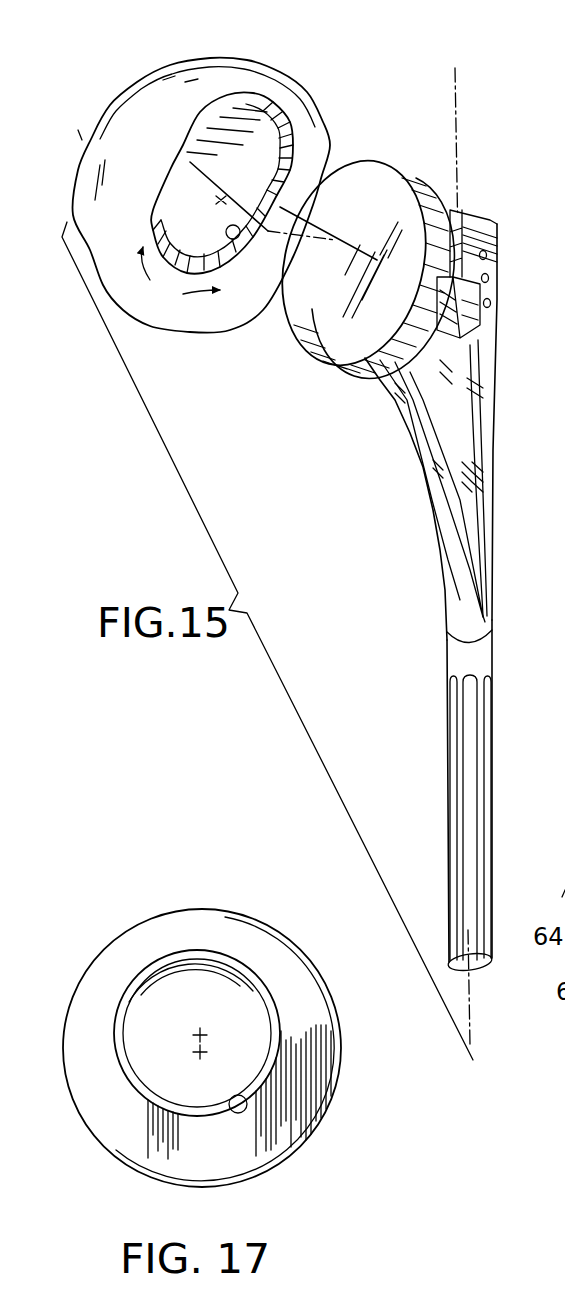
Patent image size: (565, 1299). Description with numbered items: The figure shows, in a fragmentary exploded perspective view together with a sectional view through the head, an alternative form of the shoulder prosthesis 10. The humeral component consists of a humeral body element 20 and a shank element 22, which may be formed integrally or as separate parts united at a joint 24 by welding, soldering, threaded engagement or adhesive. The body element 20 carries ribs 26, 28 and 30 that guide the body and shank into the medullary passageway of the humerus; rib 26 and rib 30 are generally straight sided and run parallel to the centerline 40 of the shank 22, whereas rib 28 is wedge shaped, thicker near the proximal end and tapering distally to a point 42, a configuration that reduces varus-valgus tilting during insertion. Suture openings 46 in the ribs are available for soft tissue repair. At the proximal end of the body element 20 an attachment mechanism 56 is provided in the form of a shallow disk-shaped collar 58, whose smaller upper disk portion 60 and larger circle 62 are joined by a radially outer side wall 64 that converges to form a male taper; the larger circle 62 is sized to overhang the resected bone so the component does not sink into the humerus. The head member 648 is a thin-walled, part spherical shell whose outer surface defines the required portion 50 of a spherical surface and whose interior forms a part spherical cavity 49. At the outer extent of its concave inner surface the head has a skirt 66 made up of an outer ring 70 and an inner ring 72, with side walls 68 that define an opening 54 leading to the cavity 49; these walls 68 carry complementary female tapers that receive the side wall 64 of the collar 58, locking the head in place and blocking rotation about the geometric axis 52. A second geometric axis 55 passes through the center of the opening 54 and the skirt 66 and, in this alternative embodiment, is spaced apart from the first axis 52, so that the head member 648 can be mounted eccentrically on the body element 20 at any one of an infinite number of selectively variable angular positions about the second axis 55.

In FIG. 15, the shoulder prosthesis 10 is at (72, 123).
In FIG. 15, the humeral body element 20 is at (500, 282).
In FIG. 15, the shank element 22 is at (501, 697).
In FIG. 15, the joint 24 is at (447, 643).
In FIG. 15, the rib 26 is at (427, 430).
In FIG. 15, the rib 28 is at (473, 431).
In FIG. 15, the rib 30 is at (475, 225).
In FIG. 15, the centerline 40 is at (460, 106).
In FIG. 15, the point 42 is at (485, 614).
In FIG. 15, the suture openings 46 is at (497, 243).
In FIG. 15, the part spherical cavity 49 is at (229, 146).
In FIG. 17, the part spherical cavity 49 is at (166, 1046).
In FIG. 15, the portion of a spherical surface 50 is at (130, 117).
In FIG. 15, the geometric axis 52 is at (222, 200).
In FIG. 17, the geometric axis 52 is at (201, 1052).
In FIG. 17, the opening 54 is at (282, 1003).
In FIG. 15, the second geometric axis 55 is at (293, 185).
In FIG. 17, the second geometric axis 55 is at (203, 1033).
In FIG. 15, the attachment mechanism 56 is at (305, 378).
In FIG. 15, the disk-shaped collar 58 is at (380, 194).
In FIG. 15, the upper disk portion 60 is at (310, 320).
In FIG. 15, the larger circle 62 is at (423, 347).
In FIG. 15, the side wall 64 is at (363, 362).
In FIG. 15, the skirt 66 is at (177, 313).
In FIG. 17, the skirt 66 is at (117, 1127).
In FIG. 15, the side walls 68 is at (293, 153).
In FIG. 17, the side walls 68 is at (248, 1100).
In FIG. 15, the outer ring 70 is at (230, 310).
In FIG. 15, the inner ring 72 is at (237, 240).
In FIG. 15, the head member 648 is at (176, 66).
In FIG. 17, the head member 648 is at (68, 988).